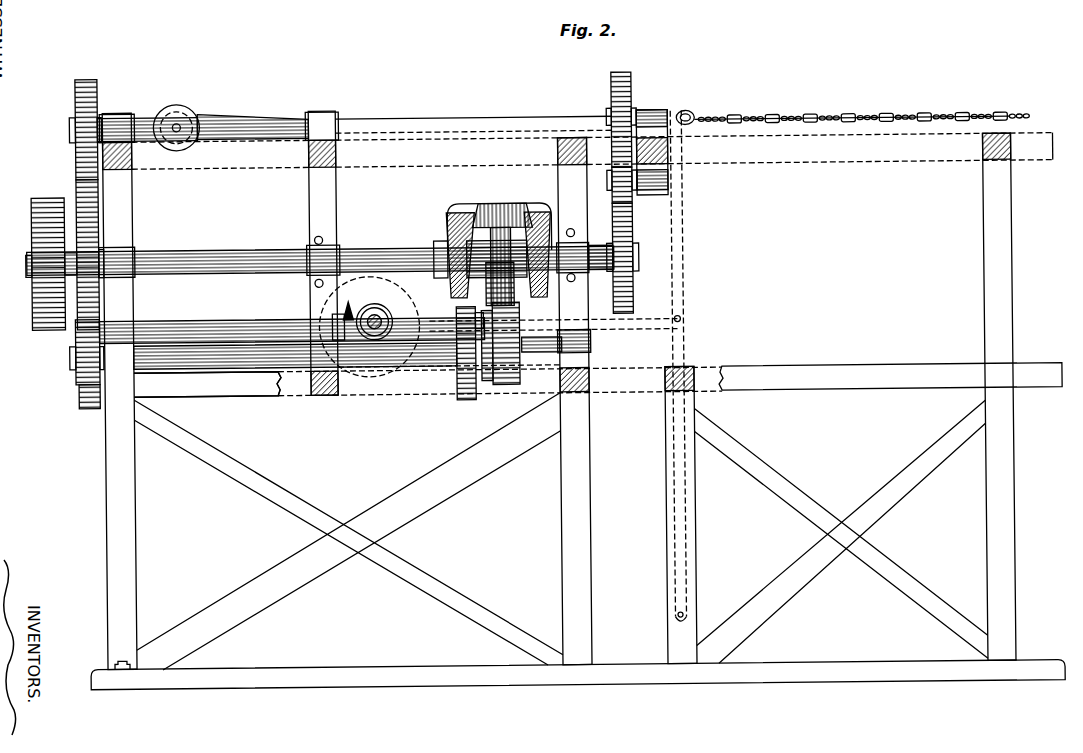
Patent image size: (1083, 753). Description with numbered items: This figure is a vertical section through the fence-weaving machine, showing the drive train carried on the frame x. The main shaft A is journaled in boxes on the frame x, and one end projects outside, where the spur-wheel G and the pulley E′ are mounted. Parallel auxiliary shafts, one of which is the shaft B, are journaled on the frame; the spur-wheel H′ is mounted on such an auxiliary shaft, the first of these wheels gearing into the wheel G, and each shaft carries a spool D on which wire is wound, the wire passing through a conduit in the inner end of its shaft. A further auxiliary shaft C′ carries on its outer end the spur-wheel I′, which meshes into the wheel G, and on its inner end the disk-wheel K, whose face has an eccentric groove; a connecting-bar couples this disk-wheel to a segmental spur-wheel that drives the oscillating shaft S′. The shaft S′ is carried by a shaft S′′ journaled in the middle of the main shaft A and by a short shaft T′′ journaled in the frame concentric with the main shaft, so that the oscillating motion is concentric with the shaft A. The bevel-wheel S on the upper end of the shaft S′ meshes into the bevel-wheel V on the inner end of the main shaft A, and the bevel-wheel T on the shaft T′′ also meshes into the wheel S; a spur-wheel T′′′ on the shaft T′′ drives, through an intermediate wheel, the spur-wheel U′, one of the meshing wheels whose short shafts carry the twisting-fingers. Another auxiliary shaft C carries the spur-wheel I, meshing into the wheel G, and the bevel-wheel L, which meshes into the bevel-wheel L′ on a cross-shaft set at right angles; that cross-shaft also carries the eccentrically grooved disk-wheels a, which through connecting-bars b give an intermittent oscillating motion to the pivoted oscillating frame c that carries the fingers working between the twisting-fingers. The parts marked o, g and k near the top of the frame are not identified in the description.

The frame x is at (575, 397).
The main shaft A is at (28, 266).
The auxiliary shaft B is at (203, 115).
The auxiliary shaft C is at (329, 332).
The auxiliary shaft C′ is at (207, 385).
The spool D is at (176, 115).
The pulley E′ is at (34, 264).
The spur-wheel G is at (78, 208).
The spur-wheel H′ is at (76, 103).
The spur-wheel I is at (76, 347).
The spur-wheel I′ is at (79, 388).
The disk-wheel K is at (476, 388).
The bevel-wheel L is at (343, 310).
The bevel-wheel L′ is at (374, 310).
The disk-wheel a is at (374, 326).
The bevel-wheel S is at (512, 205).
The oscillating shaft S′ is at (498, 255).
The shaft S′′ is at (492, 266).
The collar o is at (471, 309).
The bevel-wheel T is at (572, 236).
The short shaft T′′ is at (600, 244).
The spur-wheel T′′′ is at (636, 262).
The connecting-bar b is at (581, 324).
The spur-wheel U′ is at (612, 92).
The bevel-wheel V is at (438, 251).
The chain k is at (407, 117).
The chain g is at (772, 117).
The oscillating frame c is at (570, 366).